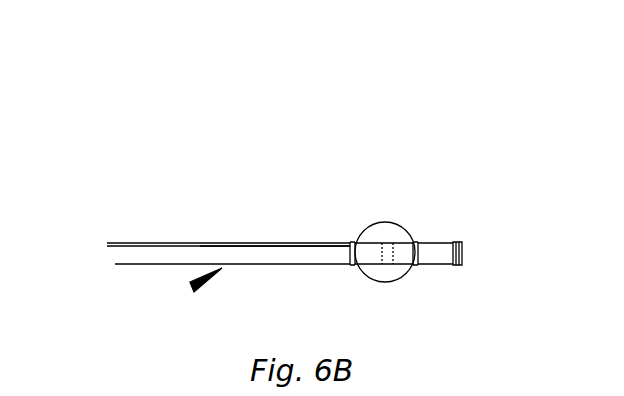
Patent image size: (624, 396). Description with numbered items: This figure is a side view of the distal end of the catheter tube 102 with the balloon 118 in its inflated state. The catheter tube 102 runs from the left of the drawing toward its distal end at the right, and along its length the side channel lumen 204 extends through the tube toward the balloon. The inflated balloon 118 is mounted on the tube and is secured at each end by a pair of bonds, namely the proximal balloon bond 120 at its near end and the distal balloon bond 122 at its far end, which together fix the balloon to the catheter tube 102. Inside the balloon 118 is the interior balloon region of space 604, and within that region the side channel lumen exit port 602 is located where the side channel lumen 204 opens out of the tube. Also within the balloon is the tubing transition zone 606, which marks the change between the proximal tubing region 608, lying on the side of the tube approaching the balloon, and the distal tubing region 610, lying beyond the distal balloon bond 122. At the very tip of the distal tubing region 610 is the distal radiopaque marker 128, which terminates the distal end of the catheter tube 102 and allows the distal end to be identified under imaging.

The catheter tube 102 is at (196, 286).
The inflated balloon 118 is at (370, 243).
The proximal balloon bond 120 is at (348, 240).
The distal balloon bond 122 is at (417, 265).
The distal radiopaque marker 128 is at (462, 243).
The side channel lumen 204 is at (170, 242).
The side channel lumen exit port 602 is at (385, 245).
The interior balloon region of space 604 is at (394, 237).
The tubing transition zone 606 is at (381, 256).
The proximal tubing region 608 is at (257, 253).
The distal tubing region 610 is at (443, 260).